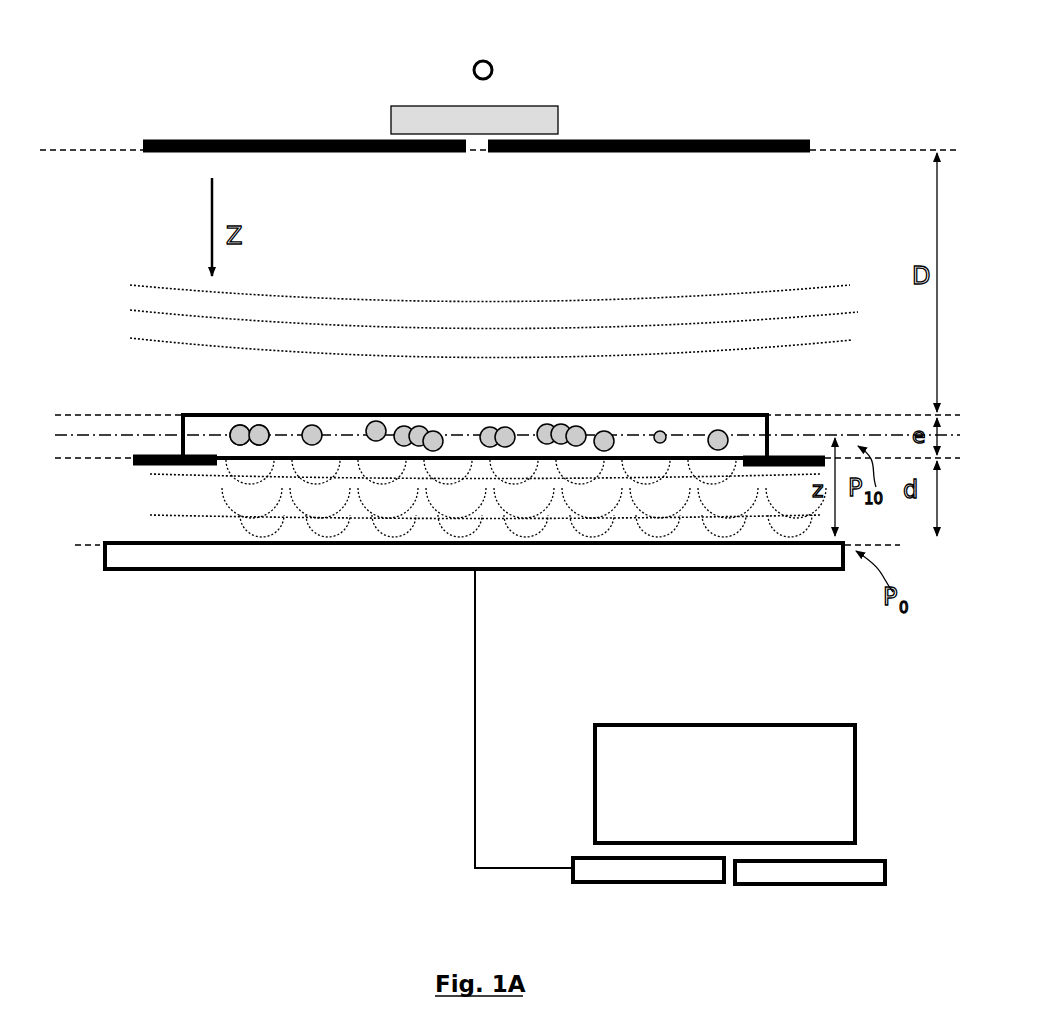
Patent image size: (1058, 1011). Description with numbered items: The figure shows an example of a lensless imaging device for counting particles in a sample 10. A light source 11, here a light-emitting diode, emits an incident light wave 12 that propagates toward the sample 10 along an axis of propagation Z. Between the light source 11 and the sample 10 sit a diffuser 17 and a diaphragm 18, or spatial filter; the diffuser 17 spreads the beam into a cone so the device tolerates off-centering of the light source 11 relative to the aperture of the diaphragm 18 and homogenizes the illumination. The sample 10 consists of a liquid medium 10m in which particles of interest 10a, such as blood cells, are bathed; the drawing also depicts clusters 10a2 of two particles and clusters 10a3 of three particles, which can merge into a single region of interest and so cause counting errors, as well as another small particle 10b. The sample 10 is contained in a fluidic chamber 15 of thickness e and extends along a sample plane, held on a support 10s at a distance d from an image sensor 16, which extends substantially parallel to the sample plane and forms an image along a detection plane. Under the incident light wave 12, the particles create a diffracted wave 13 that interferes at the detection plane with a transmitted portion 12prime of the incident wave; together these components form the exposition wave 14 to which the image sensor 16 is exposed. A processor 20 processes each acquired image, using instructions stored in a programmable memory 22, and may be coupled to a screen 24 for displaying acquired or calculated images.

The sample 10 is at (178, 432).
The particles of interest 10a is at (358, 425).
The clusters containing two particles 10a2 is at (222, 421).
The clusters containing three particles 10a3 is at (421, 425).
The small particle 10b is at (657, 428).
The medium 10m is at (695, 427).
The support 10s is at (170, 466).
The light source 11 is at (470, 68).
The incident light wave 12 is at (121, 270).
The transmitted portion of the incident light wave 12prime is at (335, 530).
The diffracted wave 13 is at (470, 531).
The exposition wave 14 is at (488, 569).
The fluidic chamber 15 is at (772, 433).
The image sensor 16 is at (812, 568).
The diffuser 17 is at (540, 123).
The diaphragm 18 is at (815, 150).
The processor 20 is at (640, 874).
The programmable memory 22 is at (783, 875).
The screen 24 is at (832, 753).